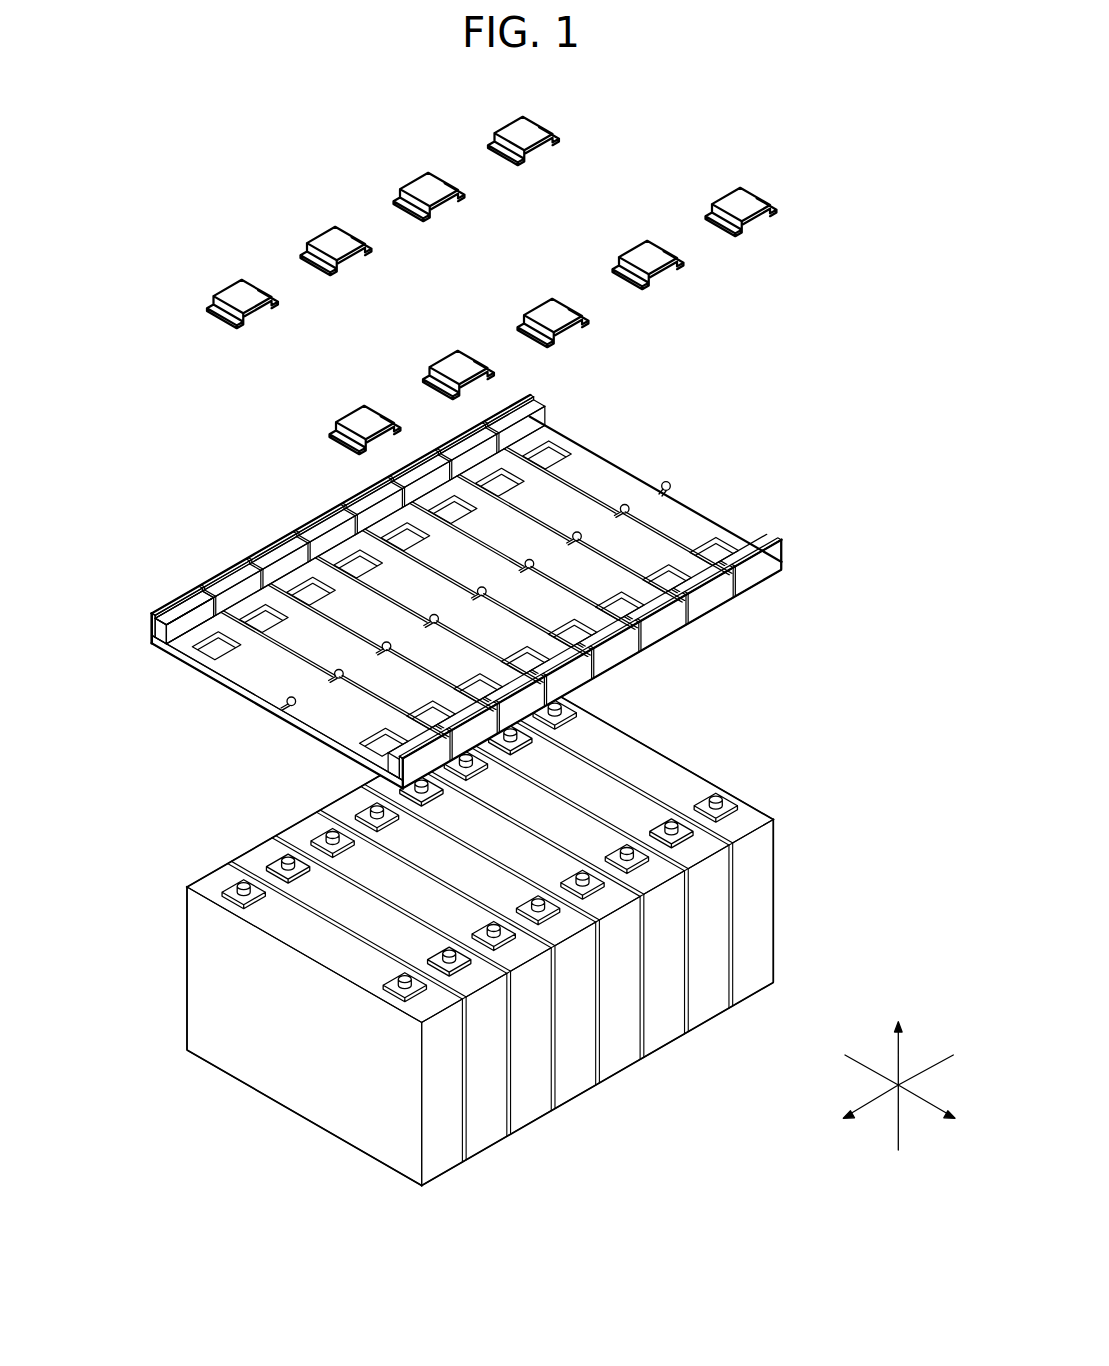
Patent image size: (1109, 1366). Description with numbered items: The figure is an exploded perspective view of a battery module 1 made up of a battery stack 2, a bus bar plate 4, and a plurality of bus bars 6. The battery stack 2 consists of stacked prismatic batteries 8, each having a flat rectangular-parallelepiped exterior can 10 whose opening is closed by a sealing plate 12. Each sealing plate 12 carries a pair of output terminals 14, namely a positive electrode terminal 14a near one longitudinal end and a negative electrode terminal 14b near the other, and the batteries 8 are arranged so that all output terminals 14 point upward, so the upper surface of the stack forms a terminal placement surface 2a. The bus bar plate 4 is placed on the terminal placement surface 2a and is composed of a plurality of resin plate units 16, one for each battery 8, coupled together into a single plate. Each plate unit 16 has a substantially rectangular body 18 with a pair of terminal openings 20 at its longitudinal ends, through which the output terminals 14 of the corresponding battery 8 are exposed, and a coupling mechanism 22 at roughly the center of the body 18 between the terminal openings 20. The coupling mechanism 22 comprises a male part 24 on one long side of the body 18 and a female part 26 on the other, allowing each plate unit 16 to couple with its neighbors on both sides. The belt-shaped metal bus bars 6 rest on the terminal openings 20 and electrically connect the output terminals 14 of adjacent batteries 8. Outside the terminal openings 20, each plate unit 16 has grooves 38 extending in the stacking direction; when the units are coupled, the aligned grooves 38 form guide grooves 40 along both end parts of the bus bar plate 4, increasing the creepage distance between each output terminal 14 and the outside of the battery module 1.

The battery module 1 is at (485, 1318).
The battery stack 2 is at (503, 975).
The terminal placement surface 2a is at (635, 763).
The bus bar plate 4 is at (481, 585).
The bus bar 6 is at (766, 186).
The battery 8 is at (442, 1092).
The exterior can 10 is at (211, 1052).
The sealing plate 12 is at (324, 943).
The output terminal 14 is at (422, 983).
The positive electrode terminal 14a is at (240, 884).
The negative electrode terminal 14b is at (388, 1000).
The plate unit 16 is at (424, 603).
The body 18 is at (247, 672).
The terminal opening 20 is at (209, 636).
The coupling mechanism 22 is at (460, 594).
The male part 24 is at (672, 485).
The female part 26 is at (287, 708).
The groove 38 is at (183, 597).
The guide groove 40 is at (546, 397).